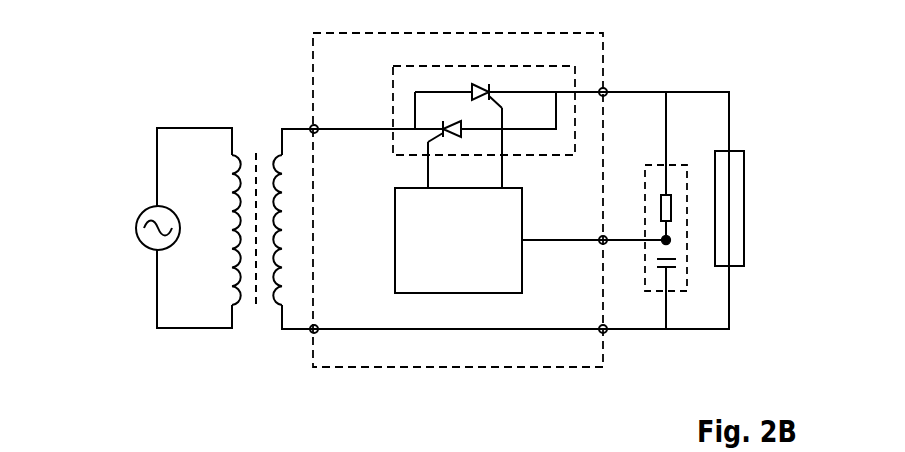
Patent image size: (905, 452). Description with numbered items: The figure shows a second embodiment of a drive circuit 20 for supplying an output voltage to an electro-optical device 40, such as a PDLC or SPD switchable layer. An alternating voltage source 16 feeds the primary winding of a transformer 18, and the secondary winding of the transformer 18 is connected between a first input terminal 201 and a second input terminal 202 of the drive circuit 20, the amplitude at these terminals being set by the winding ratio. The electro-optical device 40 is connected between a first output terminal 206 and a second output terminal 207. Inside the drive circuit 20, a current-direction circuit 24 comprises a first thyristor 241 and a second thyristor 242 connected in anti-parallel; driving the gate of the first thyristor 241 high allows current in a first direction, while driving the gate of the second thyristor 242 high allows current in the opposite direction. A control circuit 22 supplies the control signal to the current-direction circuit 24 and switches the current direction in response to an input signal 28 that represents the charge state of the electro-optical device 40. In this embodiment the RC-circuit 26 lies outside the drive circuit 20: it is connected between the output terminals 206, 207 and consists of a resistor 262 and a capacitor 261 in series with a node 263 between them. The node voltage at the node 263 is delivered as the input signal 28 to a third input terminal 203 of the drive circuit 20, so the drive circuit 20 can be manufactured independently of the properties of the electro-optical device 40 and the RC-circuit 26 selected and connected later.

The alternating voltage source 16 is at (150, 250).
The transformer 18 is at (255, 322).
The drive circuit 20 is at (604, 42).
The control circuit 22 is at (458, 240).
The current-direction circuit 24 is at (590, 62).
The RC-circuit 26 is at (687, 277).
The input signal 28 is at (552, 240).
The electro-optical device 40 is at (732, 221).
The first input terminal 201 is at (312, 332).
The second input terminal 202 is at (312, 126).
The third input terminal 203 is at (600, 239).
The first output terminal 206 is at (606, 89).
The second output terminal 207 is at (601, 333).
The first thyristor 241 is at (460, 120).
The second thyristor 242 is at (486, 82).
The capacitor 261 is at (665, 269).
The resistor 262 is at (665, 207).
The node 263 is at (668, 243).